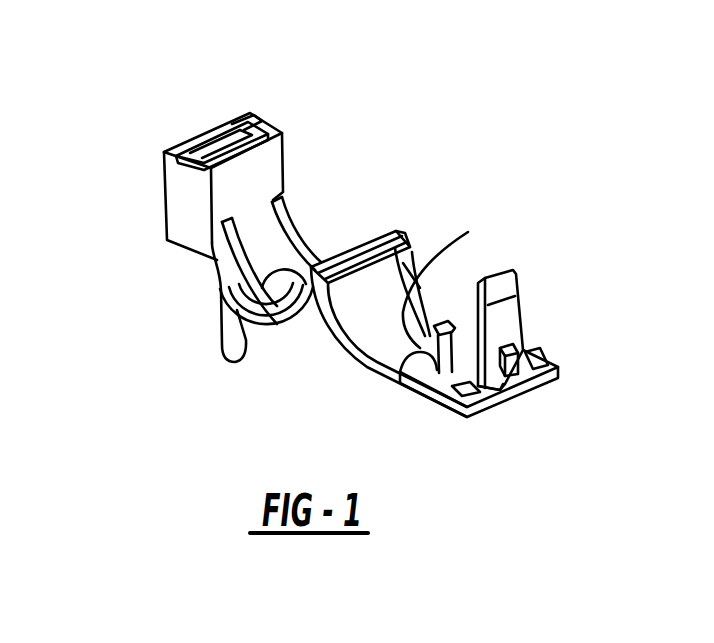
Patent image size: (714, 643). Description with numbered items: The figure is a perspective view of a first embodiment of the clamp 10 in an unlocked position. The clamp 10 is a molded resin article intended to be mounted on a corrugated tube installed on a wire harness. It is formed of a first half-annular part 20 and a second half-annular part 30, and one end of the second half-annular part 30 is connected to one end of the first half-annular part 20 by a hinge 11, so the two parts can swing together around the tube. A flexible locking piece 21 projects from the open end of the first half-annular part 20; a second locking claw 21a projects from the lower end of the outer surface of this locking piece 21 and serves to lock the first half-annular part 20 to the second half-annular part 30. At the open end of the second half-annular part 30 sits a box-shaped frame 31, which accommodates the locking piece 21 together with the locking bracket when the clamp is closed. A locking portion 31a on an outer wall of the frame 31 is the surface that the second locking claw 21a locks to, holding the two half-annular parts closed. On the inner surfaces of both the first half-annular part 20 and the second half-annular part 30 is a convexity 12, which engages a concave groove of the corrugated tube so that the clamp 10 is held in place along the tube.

The clamp 10 is at (320, 232).
The hinge 11 is at (388, 233).
The convexity 12 is at (220, 358).
The first half-annular part 20 is at (357, 366).
The locking piece 21 is at (505, 334).
The second locking claw 21a is at (517, 377).
The second half-annular part 30 is at (195, 256).
The box-shaped frame 31 is at (183, 195).
The locking portion 31a is at (222, 125).